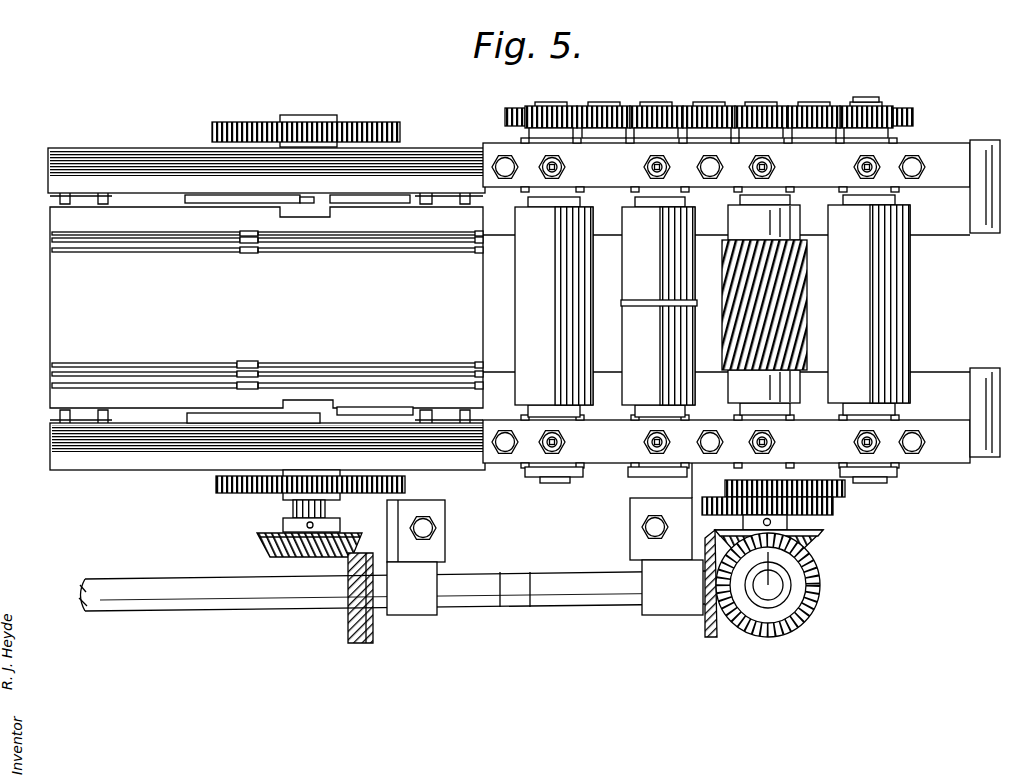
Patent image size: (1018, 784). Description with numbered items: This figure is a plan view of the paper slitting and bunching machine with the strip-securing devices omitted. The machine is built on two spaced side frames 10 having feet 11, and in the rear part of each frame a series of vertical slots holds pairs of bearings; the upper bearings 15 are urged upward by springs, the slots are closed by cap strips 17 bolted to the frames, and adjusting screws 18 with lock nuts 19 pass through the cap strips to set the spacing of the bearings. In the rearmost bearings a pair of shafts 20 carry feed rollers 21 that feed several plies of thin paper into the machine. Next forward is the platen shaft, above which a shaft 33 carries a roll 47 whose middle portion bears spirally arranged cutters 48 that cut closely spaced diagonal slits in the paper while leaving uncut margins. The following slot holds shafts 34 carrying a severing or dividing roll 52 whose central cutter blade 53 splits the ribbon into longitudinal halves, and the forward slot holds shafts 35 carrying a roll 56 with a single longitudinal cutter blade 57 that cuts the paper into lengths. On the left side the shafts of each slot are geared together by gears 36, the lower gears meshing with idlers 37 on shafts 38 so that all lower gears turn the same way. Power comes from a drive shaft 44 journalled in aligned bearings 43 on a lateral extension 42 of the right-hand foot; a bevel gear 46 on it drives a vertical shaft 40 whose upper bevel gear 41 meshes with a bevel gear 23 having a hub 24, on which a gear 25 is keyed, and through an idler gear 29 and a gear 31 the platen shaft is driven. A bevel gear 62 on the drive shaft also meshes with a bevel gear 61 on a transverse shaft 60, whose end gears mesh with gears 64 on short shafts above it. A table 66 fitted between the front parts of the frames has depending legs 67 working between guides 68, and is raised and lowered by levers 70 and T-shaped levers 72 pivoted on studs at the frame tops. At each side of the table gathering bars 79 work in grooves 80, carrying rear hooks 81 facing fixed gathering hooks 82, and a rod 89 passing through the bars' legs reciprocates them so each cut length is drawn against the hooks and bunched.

The side frame 10 is at (143, 138).
The foot 11 is at (940, 226).
The upper bearing 15 is at (525, 138).
The cap strip 17 is at (953, 152).
The adjusting screw 18 is at (640, 165).
The lock nut 19 is at (860, 163).
The shaft 20 is at (873, 100).
The feed roller 21 is at (895, 308).
The bevel gear 23 is at (815, 543).
The hub 24 is at (817, 532).
The gear 25 is at (800, 519).
The idler gear 29 is at (837, 499).
The gear 31 is at (727, 480).
The shaft 33 is at (763, 102).
The shaft 34 is at (663, 88).
The shaft 35 is at (548, 90).
The gear 36 is at (507, 113).
The idler 37 is at (603, 113).
The shaft 38 is at (708, 103).
The shaft 40 is at (783, 578).
The bevel gear 41 is at (815, 610).
The lateral extension 42 is at (515, 566).
The bearing 43 is at (412, 613).
The drive shaft 44 is at (582, 590).
The bevel gear 46 is at (730, 623).
The roll 47 is at (737, 212).
The spirally arranged cutters 48 is at (790, 252).
The severing or dividing roll 52 is at (633, 212).
The central cutter blade 53 is at (620, 305).
The roll 56 is at (528, 272).
The cutter blade 57 is at (555, 288).
The transverse shaft 60 is at (296, 508).
The bevel gear 61 is at (267, 553).
The bevel gear 62 is at (348, 632).
The gear 64 is at (236, 113).
The table 66 is at (52, 287).
The depending leg 67 is at (76, 193).
The guide 68 is at (98, 204).
The lever 70 is at (252, 201).
The T-shaped lever 72 is at (375, 199).
The gathering or bunching bar 79 is at (374, 244).
The groove 80 is at (177, 237).
The hook 81 is at (473, 237).
The fixed gathering hook 82 is at (240, 240).
The rod 89 is at (163, 380).